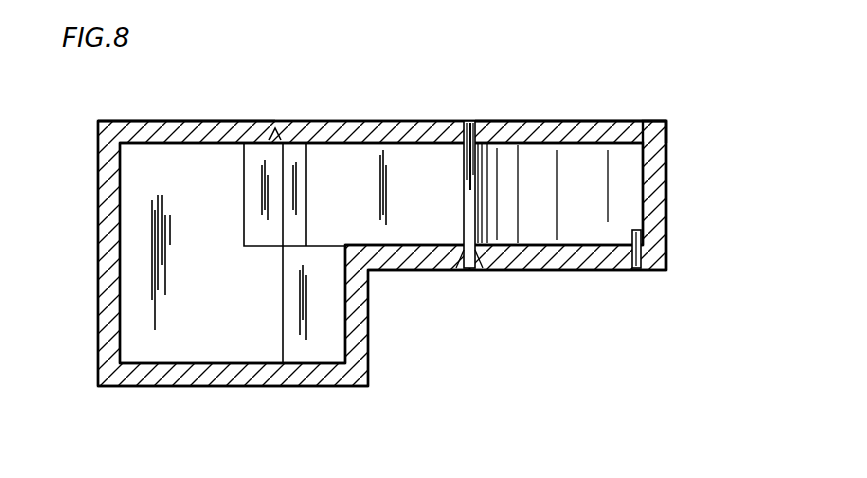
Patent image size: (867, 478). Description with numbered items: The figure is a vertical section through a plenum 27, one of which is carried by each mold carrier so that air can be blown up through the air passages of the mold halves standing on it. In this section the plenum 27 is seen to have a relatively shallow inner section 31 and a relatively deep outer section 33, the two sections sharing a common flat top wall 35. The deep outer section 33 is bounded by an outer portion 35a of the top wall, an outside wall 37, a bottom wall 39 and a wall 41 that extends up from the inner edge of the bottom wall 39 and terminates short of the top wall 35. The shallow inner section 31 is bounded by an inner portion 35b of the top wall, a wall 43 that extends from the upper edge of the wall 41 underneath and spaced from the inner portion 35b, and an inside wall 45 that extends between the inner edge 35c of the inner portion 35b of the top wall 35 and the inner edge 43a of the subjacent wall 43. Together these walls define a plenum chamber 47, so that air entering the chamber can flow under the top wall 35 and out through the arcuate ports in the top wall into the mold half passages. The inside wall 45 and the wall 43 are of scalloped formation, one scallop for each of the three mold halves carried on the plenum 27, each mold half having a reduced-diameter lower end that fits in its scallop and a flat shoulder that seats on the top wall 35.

The plenum 27 is at (677, 113).
The inner section 31 is at (541, 280).
The outer section 33 is at (204, 390).
The top wall 35 is at (382, 83).
The outer portion of the top wall 35a is at (207, 96).
The inner portion of the top wall 35b is at (588, 95).
The inner edge of the inner portion of the top wall 35c is at (655, 142).
The outside wall 37 is at (98, 250).
The bottom wall 39 is at (293, 388).
The wall 41 is at (370, 317).
The wall 43 is at (490, 270).
The inner edge of wall 43a is at (657, 260).
The inside wall 45 is at (667, 192).
The plenum chamber 47 is at (226, 285).